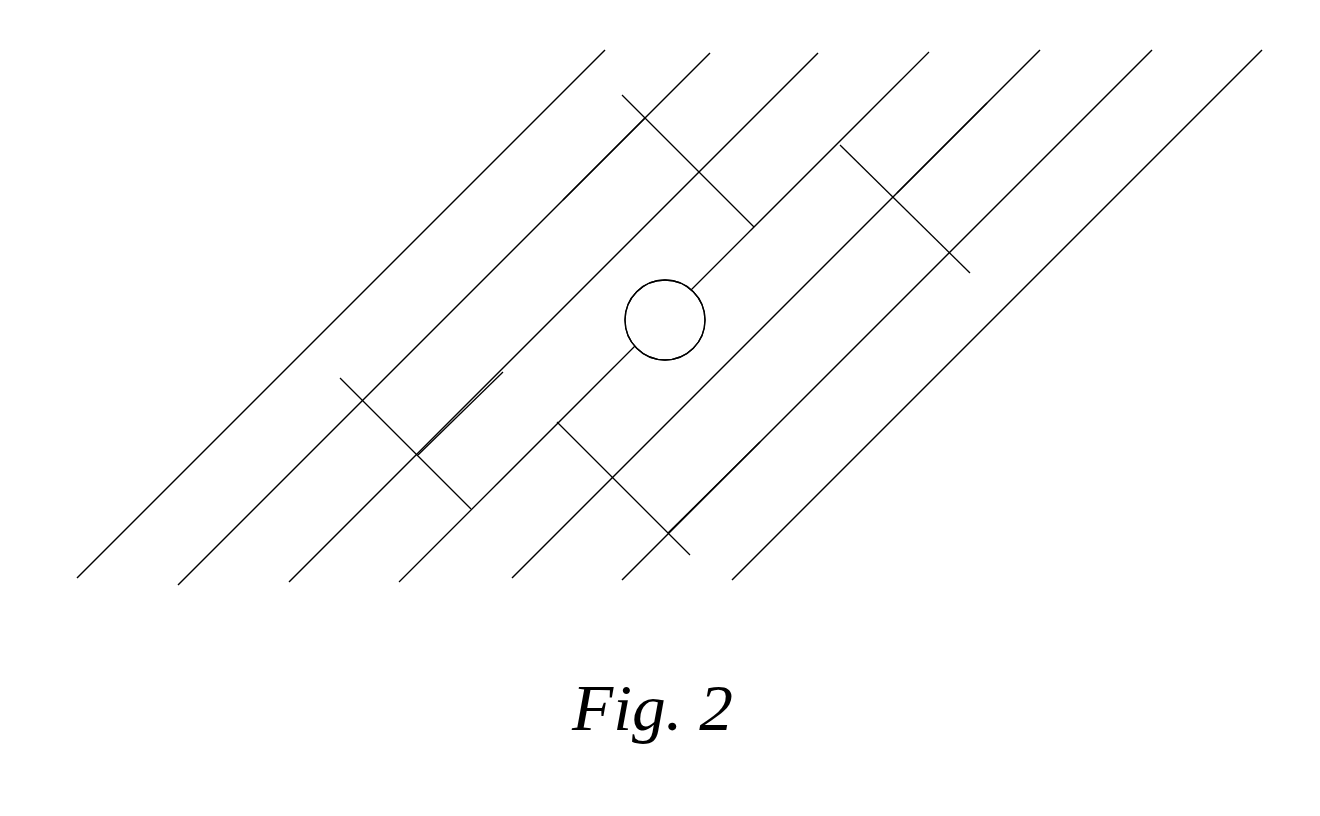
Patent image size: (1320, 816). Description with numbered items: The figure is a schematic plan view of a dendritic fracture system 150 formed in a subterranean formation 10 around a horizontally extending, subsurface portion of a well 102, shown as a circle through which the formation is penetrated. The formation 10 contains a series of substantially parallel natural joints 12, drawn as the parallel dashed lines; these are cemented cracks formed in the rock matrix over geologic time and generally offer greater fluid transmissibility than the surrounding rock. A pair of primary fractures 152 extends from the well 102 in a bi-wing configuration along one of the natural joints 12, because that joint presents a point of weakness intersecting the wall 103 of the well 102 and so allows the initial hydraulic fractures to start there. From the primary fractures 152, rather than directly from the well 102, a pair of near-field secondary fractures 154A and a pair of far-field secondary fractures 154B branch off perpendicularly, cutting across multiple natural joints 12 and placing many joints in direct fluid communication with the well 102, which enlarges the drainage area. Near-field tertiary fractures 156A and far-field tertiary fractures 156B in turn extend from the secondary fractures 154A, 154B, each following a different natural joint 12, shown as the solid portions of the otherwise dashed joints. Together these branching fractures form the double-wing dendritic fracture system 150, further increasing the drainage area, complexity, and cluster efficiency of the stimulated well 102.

The subterranean formation 10 is at (533, 310).
The natural joints 12 is at (402, 252).
The well 102 is at (680, 280).
The wall of well 103 is at (700, 300).
The dendritic fracture system 150 is at (350, 166).
The primary fractures 152 is at (806, 172).
The near-field secondary fractures 154A is at (650, 123).
The far-field secondary fractures 154B is at (923, 233).
The near-field tertiary fractures 156A is at (606, 156).
The far-field tertiary fractures 156B is at (972, 118).